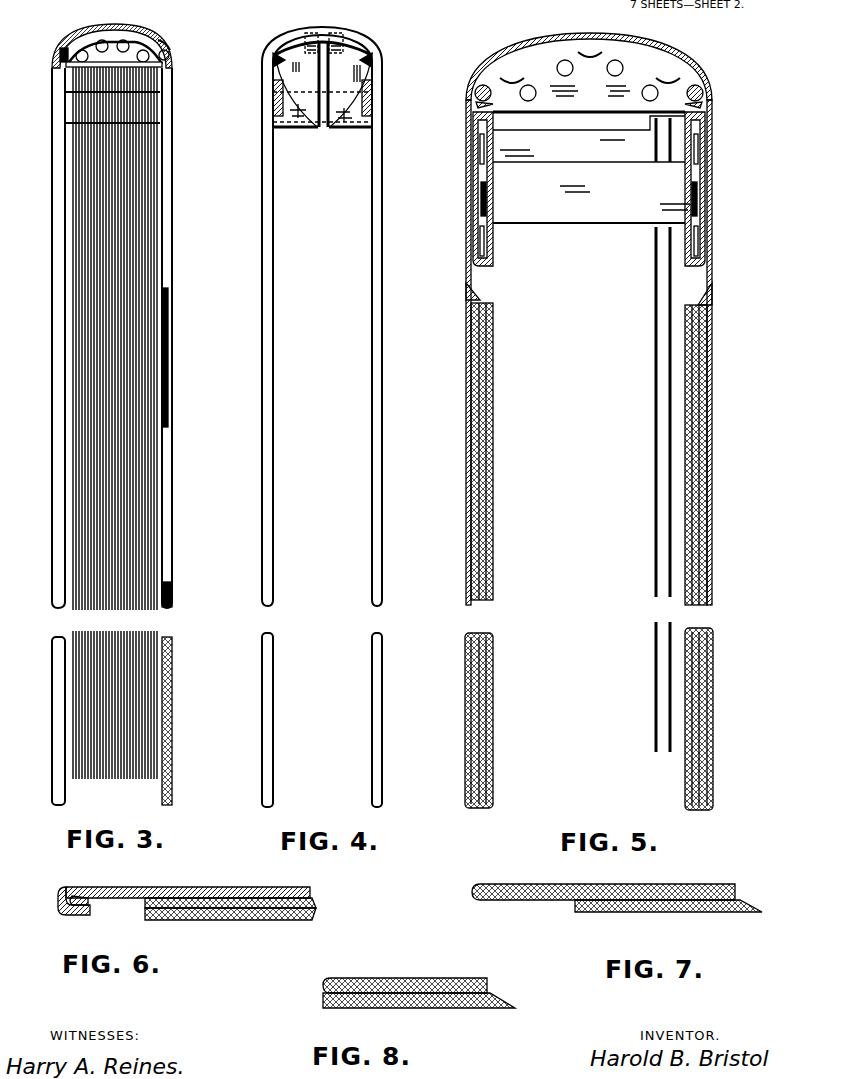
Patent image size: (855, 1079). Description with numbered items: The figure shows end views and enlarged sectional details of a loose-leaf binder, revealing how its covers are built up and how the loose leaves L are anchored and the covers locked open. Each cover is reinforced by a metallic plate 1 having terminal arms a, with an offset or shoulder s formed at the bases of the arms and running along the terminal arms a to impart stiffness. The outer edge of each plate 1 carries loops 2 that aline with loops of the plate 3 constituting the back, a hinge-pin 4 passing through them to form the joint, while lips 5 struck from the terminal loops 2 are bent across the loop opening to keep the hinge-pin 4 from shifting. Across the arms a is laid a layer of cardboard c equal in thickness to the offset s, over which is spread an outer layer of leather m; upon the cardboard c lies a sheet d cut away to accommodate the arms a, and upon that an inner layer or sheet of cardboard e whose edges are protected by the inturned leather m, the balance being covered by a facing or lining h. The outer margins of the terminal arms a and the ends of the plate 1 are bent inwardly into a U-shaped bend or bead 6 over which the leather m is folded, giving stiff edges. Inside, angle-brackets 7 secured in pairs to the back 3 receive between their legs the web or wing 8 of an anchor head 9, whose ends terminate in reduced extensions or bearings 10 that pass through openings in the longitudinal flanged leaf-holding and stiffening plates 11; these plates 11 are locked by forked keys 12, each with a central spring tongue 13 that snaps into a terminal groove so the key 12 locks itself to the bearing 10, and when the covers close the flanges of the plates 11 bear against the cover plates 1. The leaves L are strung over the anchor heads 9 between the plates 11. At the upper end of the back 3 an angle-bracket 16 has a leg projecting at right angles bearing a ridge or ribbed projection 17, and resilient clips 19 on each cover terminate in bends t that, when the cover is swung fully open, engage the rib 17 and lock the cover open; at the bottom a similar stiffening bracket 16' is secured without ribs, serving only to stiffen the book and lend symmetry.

In FIG. 3, the metallic plate 1 is at (174, 100).
In FIG. 5, the metallic plate 1 is at (470, 232).
In FIG. 3, the loops 2 is at (166, 40).
In FIG. 5, the loops 2 is at (478, 84).
In FIG. 3, the plate constituting the back 3 is at (130, 28).
In FIG. 5, the plate constituting the back 3 is at (606, 40).
In FIG. 5, the hinge-pin 4 is at (474, 92).
In FIG. 3, the lips 5 is at (169, 55).
In FIG. 3, the U-shaped bend or bead 6 is at (166, 236).
In FIG. 6, the U-shaped bend or bead 6 is at (66, 914).
In FIG. 3, the angle-brackets 7 is at (150, 65).
In FIG. 5, the angle-brackets 7 is at (546, 62).
In FIG. 3, the web or wing 8 is at (76, 63).
In FIG. 5, the web or wing 8 is at (620, 150).
In FIG. 3, the anchor head 9 is at (72, 108).
In FIG. 5, the anchor head 9 is at (620, 222).
In FIG. 5, the reduced extensions or bearings 10 is at (478, 180).
In FIG. 5, the leaf-holding and stiffening plates 11 is at (494, 196).
In FIG. 5, the forked keys 12 is at (493, 130).
In FIG. 5, the spring tongue 13 is at (494, 164).
In FIG. 4, the angle-bracket 16 is at (304, 61).
In FIG. 3, the stiffening bracket 16' is at (41, 46).
In FIG. 4, the ridge or ribbed projection 17 is at (275, 97).
In FIG. 4, the clips or resilient arms 19 is at (294, 130).
In FIG. 3, the terminal arms a is at (173, 594).
In FIG. 5, the terminal arms a is at (484, 456).
In FIG. 6, the terminal arms a is at (100, 888).
In FIG. 7, the terminal arms a is at (576, 906).
In FIG. 3, the layer of cardboard c is at (173, 696).
In FIG. 5, the layer of cardboard c is at (470, 506).
In FIG. 6, the layer of cardboard c is at (182, 896).
In FIG. 7, the layer of cardboard c is at (670, 886).
In FIG. 8, the layer of cardboard c is at (420, 986).
In FIG. 5, the sheet d is at (490, 522).
In FIG. 6, the sheet d is at (314, 904).
In FIG. 7, the sheet d is at (736, 896).
In FIG. 8, the sheet d is at (440, 1000).
In FIG. 3, the inner layer or sheet of cardboard e is at (163, 795).
In FIG. 5, the inner layer or sheet of cardboard e is at (488, 560).
In FIG. 6, the inner layer or sheet of cardboard e is at (312, 916).
In FIG. 7, the inner layer or sheet of cardboard e is at (606, 912).
In FIG. 8, the inner layer or sheet of cardboard e is at (454, 1012).
In FIG. 5, the facing or lining h is at (494, 582).
In FIG. 6, the facing or lining h is at (256, 922).
In FIG. 7, the facing or lining h is at (718, 914).
In FIG. 8, the facing or lining h is at (470, 1010).
In FIG. 3, the loose leaves L is at (125, 457).
In FIG. 5, the loose leaves L is at (668, 342).
In FIG. 3, the outer layer of leather m is at (56, 386).
In FIG. 4, the outer layer of leather m is at (263, 342).
In FIG. 5, the outer layer of leather m is at (494, 72).
In FIG. 6, the outer layer of leather m is at (60, 900).
In FIG. 7, the outer layer of leather m is at (520, 886).
In FIG. 8, the outer layer of leather m is at (388, 980).
In FIG. 5, the offset or shoulder s is at (478, 296).
In FIG. 6, the offset or shoulder s is at (140, 900).
In FIG. 4, the bends t is at (316, 40).